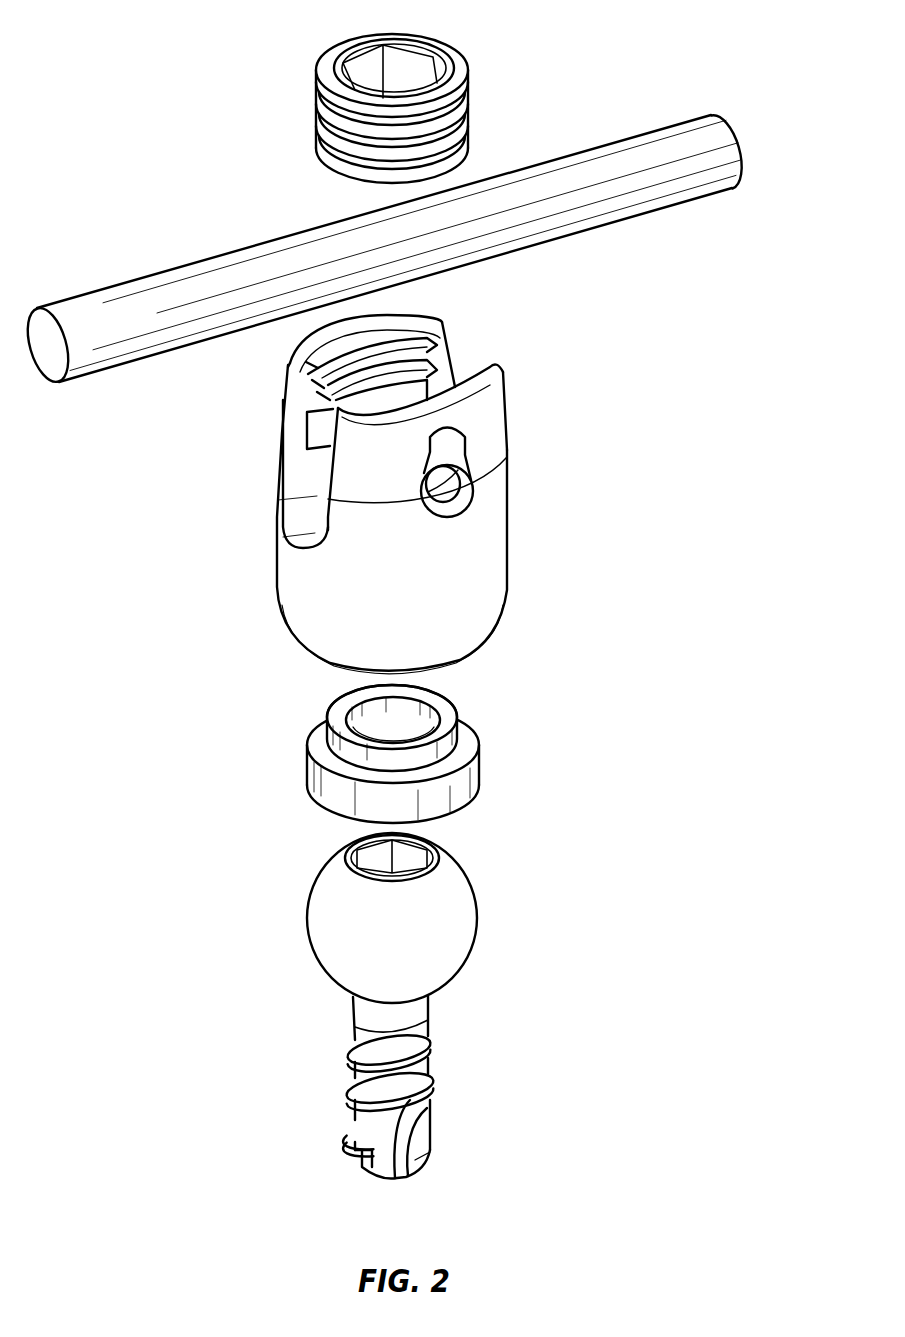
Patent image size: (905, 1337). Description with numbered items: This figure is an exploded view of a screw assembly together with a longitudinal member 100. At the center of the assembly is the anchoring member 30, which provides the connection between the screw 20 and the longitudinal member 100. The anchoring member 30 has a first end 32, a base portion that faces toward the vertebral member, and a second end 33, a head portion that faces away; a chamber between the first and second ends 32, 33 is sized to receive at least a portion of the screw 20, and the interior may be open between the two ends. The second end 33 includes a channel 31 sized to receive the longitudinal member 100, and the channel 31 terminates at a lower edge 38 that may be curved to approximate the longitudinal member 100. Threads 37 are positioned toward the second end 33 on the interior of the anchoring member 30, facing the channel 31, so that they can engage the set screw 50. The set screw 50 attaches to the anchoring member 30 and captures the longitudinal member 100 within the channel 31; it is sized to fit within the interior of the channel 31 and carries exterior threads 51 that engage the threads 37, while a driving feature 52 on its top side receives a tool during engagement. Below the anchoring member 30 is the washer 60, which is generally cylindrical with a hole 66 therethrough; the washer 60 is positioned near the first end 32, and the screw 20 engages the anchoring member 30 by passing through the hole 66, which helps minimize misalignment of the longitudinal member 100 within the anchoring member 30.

The screw 20 is at (512, 925).
The anchoring member 30 is at (418, 497).
The channel 31 is at (379, 360).
The first end 32 is at (461, 660).
The second end 33 is at (480, 380).
The threads 37 is at (325, 378).
The lower edge 38 is at (313, 523).
The set screw 50 is at (414, 95).
The exterior threads 51 is at (340, 120).
The driving feature 52 is at (365, 72).
The washer 60 is at (424, 743).
The hole 66 is at (387, 722).
The longitudinal member 100 is at (178, 278).